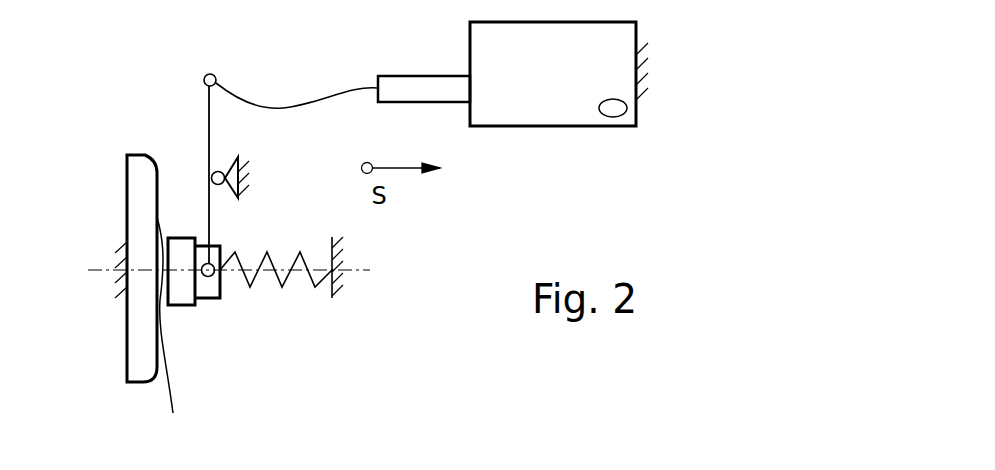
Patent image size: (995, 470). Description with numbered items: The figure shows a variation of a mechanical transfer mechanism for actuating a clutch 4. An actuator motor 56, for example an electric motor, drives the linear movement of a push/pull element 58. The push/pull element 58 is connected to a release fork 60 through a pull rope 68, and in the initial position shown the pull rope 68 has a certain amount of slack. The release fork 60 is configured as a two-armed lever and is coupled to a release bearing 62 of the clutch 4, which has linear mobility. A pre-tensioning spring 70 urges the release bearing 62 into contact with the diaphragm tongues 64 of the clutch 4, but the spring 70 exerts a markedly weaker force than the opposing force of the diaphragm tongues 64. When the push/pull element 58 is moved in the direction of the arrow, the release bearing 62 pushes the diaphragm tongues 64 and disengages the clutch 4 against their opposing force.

The clutch 4 is at (130, 345).
The actuator motor 56 is at (532, 112).
The push/pull element 58 is at (435, 89).
The release fork 60 is at (207, 133).
The release bearing 62 is at (188, 305).
The diaphragm tongues 64 is at (172, 332).
The pull rope 68 is at (283, 107).
The pre-tensioning spring 70 is at (279, 265).